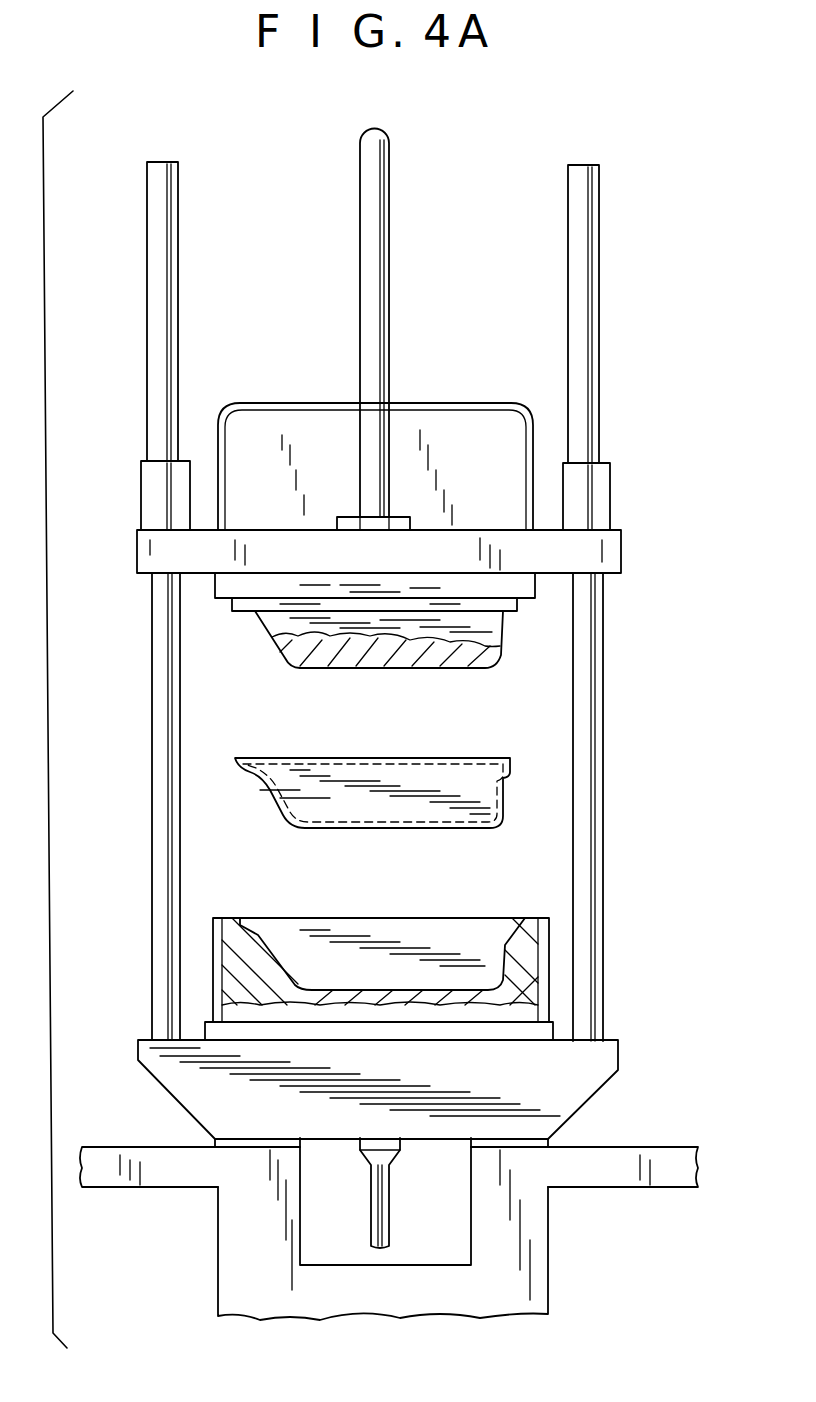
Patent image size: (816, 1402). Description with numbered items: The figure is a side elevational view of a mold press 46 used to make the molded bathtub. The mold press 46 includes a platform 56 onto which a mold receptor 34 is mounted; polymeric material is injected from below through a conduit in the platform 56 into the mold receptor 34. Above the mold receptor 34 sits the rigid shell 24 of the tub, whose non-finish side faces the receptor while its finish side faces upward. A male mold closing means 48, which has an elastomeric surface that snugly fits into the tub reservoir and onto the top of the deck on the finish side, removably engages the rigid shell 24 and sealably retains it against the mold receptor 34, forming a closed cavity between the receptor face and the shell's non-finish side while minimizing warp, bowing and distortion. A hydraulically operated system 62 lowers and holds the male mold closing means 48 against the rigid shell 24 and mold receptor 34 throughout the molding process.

The hydraulically operated system 62 is at (389, 160).
The mold press 46 is at (130, 552).
The male mold closing means 48 is at (297, 650).
The rigid shell 24 is at (270, 798).
The mold receptor 34 is at (218, 938).
The platform 56 is at (618, 1052).